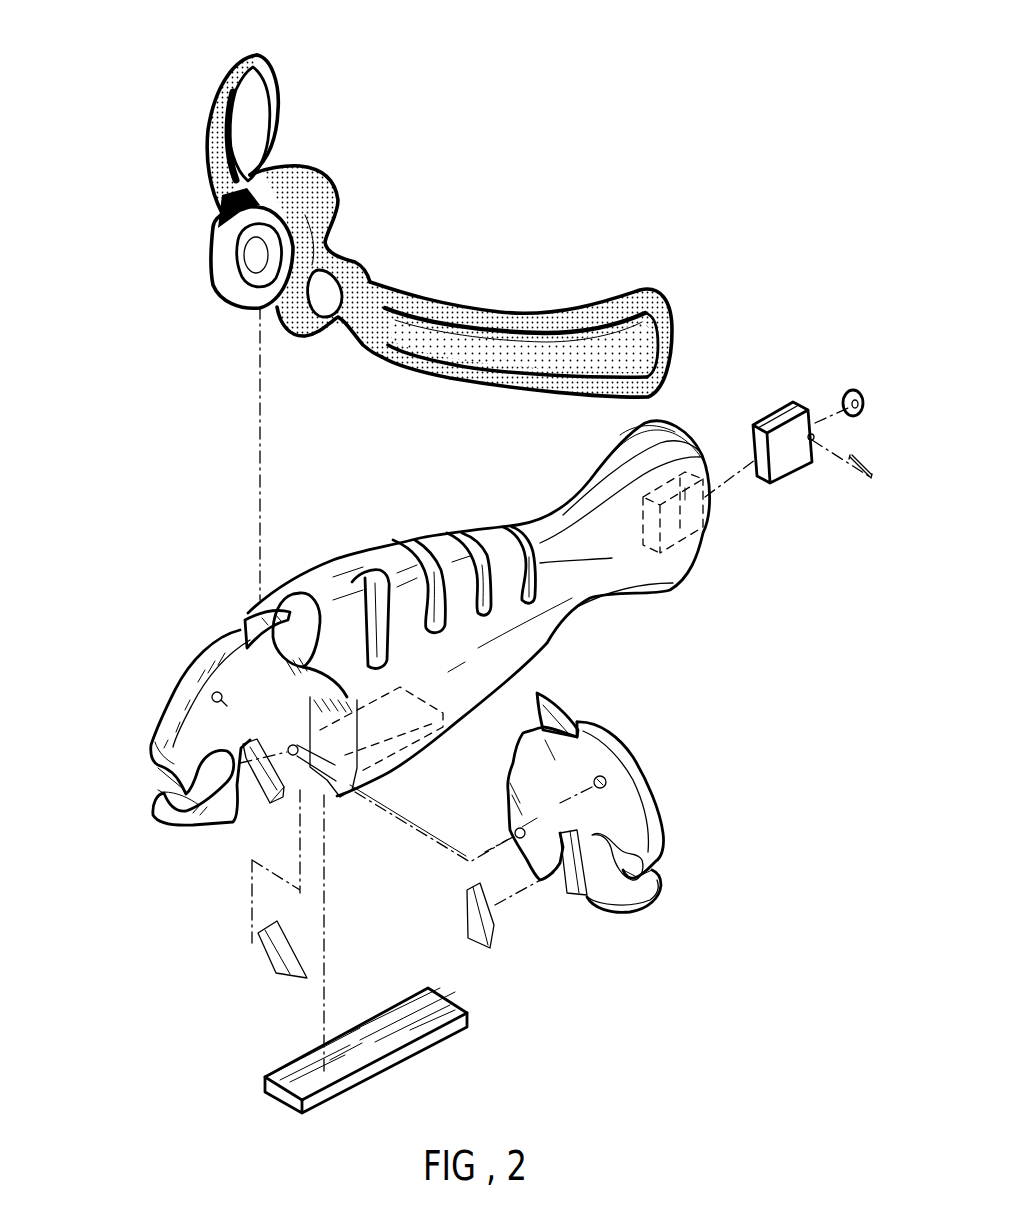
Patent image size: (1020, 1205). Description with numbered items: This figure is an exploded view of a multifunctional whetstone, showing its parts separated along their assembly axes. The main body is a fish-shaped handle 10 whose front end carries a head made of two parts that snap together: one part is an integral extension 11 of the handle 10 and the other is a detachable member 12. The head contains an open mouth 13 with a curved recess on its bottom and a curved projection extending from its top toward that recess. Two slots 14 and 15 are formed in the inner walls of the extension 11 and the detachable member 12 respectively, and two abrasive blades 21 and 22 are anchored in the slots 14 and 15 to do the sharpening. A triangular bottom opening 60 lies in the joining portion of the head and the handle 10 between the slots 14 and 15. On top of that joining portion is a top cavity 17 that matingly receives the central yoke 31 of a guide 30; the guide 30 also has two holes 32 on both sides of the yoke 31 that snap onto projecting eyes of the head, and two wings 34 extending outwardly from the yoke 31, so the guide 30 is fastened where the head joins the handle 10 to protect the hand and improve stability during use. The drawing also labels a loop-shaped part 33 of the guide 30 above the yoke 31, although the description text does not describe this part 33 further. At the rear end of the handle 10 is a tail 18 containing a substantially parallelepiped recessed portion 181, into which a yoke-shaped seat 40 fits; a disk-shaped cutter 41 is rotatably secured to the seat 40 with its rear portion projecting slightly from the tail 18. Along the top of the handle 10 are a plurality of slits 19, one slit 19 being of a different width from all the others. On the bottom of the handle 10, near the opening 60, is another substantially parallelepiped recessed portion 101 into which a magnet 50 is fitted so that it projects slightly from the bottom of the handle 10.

The handle 10 is at (550, 642).
The extension 11 is at (204, 702).
The detachable member 12 is at (653, 777).
The open mouth 13 is at (151, 783).
The slot 14 is at (157, 737).
The slot 15 is at (610, 912).
The top cavity 17 is at (243, 618).
The tail 18 is at (687, 567).
The recessed portion 181 is at (705, 545).
The slits 19 is at (412, 545).
The abrasive blade 21 is at (283, 960).
The abrasive blade 22 is at (466, 905).
The guide 30 is at (365, 154).
The central yoke 31 is at (313, 235).
The holes 32 is at (323, 320).
The lever loop 33 is at (262, 100).
The wings 34 is at (565, 312).
The yoke-shaped seat 40 is at (753, 423).
The disk-shaped cutter 41 is at (853, 390).
The magnet 50 is at (383, 1008).
The triangular bottom opening 60 is at (253, 808).
The recessed portion 101 is at (395, 762).